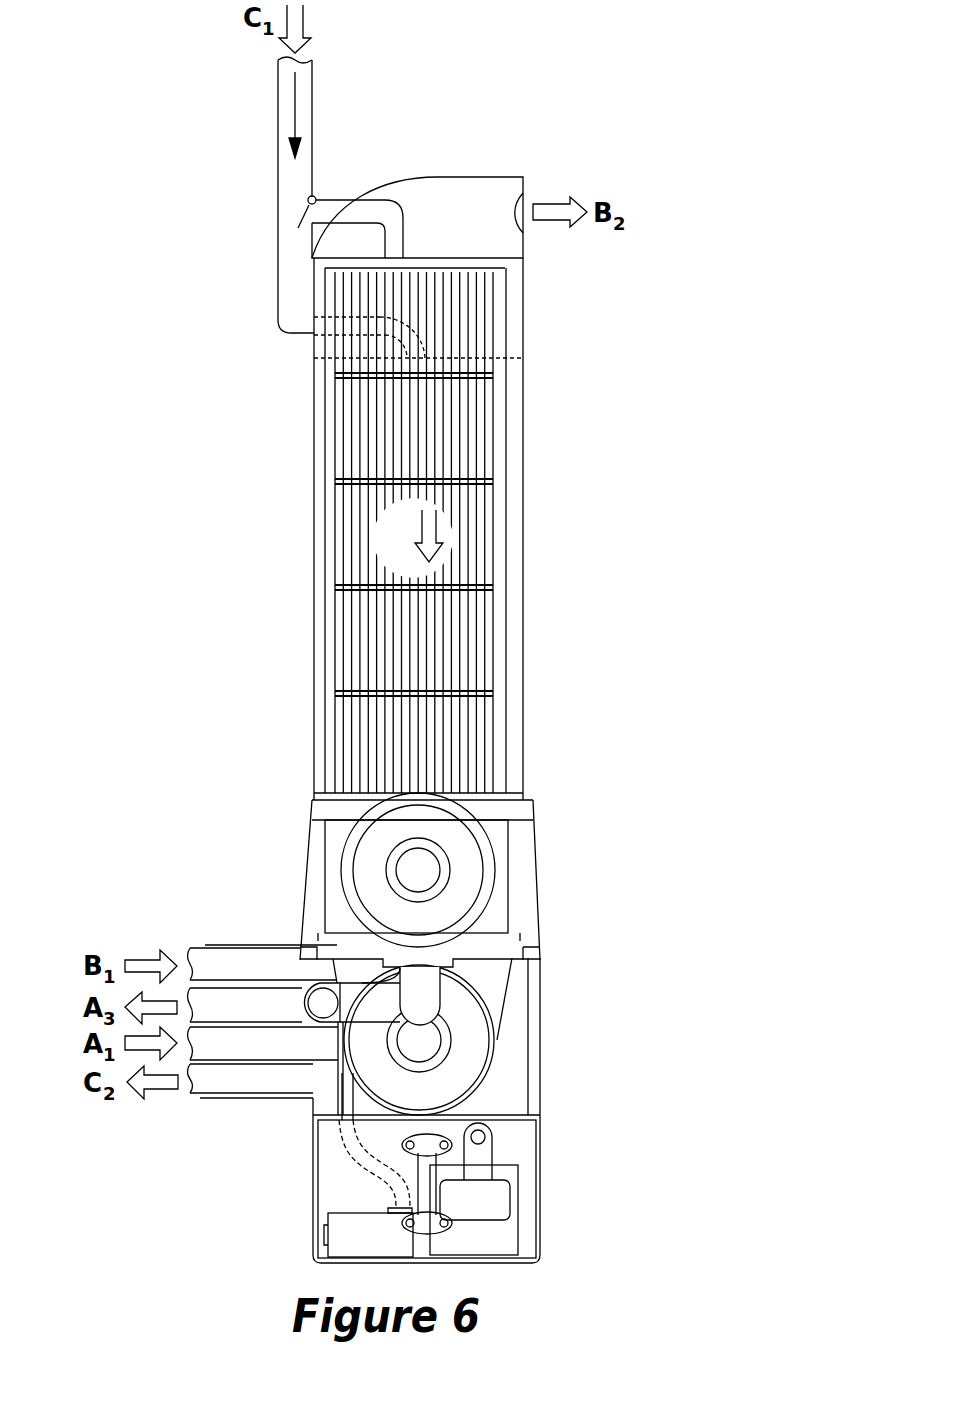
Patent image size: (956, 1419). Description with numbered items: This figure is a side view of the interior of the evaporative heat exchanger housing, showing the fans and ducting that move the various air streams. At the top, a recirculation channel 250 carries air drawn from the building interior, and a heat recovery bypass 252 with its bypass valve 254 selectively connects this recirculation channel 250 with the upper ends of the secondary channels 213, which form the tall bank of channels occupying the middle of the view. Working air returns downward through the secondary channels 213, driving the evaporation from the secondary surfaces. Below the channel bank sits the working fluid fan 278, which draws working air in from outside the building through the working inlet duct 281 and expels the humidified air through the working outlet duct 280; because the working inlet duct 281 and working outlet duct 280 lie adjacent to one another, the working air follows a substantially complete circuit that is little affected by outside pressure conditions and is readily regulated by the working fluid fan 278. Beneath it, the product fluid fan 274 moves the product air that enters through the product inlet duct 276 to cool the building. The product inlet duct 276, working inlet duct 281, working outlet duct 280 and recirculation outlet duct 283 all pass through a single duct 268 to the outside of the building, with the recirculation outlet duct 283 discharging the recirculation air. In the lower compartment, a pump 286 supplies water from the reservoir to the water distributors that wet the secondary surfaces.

The secondary channels 213 is at (490, 305).
The recirculation channel 250 is at (278, 290).
The heat recovery bypass 252 is at (327, 210).
The bypass valve 254 is at (305, 208).
The working fluid fan 278 is at (472, 865).
The product fluid fan 274 is at (472, 1042).
The working outlet duct 280 is at (250, 990).
The product inlet duct 276 is at (208, 1072).
The working inlet duct 281 is at (283, 1050).
The duct 268 is at (200, 1100).
The recirculation outlet duct 283 is at (243, 1094).
The pump 286 is at (343, 1235).